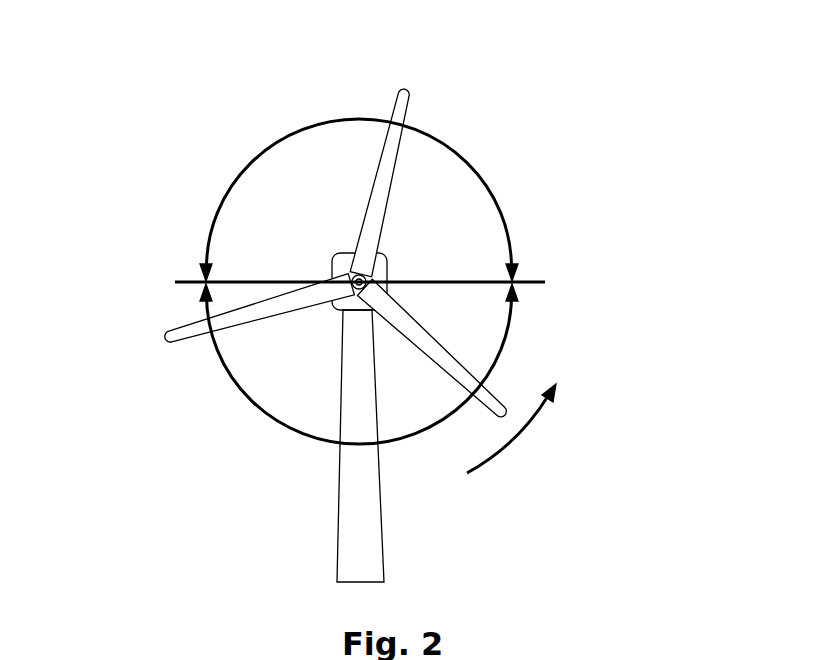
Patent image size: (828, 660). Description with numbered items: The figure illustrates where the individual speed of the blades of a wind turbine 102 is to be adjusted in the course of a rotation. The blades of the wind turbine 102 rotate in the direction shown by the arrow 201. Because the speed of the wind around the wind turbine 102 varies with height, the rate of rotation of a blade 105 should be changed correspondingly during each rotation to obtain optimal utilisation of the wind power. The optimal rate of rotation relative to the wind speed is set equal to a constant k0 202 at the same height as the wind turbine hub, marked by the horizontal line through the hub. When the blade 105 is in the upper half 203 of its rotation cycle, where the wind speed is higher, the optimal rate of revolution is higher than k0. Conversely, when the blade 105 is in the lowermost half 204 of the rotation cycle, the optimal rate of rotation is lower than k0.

The wind turbine 102 is at (362, 535).
The blade 105 is at (395, 123).
The arrow 201 is at (528, 427).
The constant k0 202 is at (563, 268).
The upper half 203 is at (305, 90).
The lowermost half 204 is at (280, 463).